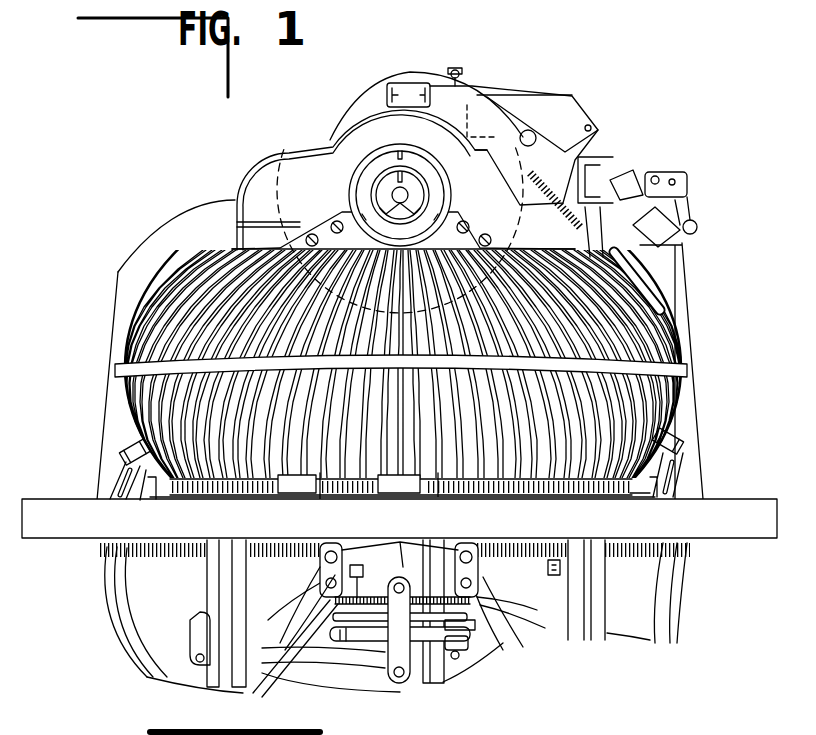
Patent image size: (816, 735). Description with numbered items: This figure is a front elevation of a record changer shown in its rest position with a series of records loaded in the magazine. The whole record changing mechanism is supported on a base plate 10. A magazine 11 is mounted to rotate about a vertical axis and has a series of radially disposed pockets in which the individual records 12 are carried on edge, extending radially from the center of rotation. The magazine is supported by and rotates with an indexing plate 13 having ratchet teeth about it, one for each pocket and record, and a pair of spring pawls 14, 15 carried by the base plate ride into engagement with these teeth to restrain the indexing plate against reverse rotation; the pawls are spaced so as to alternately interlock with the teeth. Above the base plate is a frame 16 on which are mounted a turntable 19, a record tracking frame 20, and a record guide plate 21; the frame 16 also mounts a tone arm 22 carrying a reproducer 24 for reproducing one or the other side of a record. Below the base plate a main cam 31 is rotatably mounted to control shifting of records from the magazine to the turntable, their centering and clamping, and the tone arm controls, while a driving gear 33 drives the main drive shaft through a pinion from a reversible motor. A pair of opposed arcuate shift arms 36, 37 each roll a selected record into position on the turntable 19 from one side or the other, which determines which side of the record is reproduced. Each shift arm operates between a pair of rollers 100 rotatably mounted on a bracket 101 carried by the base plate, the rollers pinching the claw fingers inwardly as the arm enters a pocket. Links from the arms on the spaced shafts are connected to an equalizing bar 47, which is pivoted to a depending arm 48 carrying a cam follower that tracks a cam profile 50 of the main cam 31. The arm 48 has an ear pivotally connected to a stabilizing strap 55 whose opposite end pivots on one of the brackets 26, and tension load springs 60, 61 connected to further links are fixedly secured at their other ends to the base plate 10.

The base plate 10 is at (70, 512).
The magazine 11 is at (165, 357).
The records 12 is at (197, 400).
The indexing plate 13 is at (202, 490).
The spring pawl 14 is at (297, 487).
The spring pawl 15 is at (400, 483).
The frame 16 is at (197, 220).
The turntable 19 is at (437, 187).
The record tracking frame 20 is at (322, 223).
The record guide plate 21 is at (330, 153).
The tone arm 22 is at (507, 118).
The reproducer 24 is at (405, 90).
The brackets 26 is at (222, 578).
The main cam 31 is at (463, 647).
The driving gear 33 is at (480, 600).
The arcuate shift arm 36 is at (683, 595).
The arcuate shift arm 37 is at (135, 627).
The equalizing bar 47 is at (342, 585).
The arm 48 is at (400, 653).
The cam profile 50 is at (463, 643).
The stabilizing strap 55 is at (332, 663).
The tension load spring 60 is at (647, 552).
The tension load spring 61 is at (277, 567).
The rollers 100 is at (123, 453).
The bracket 101 is at (137, 503).